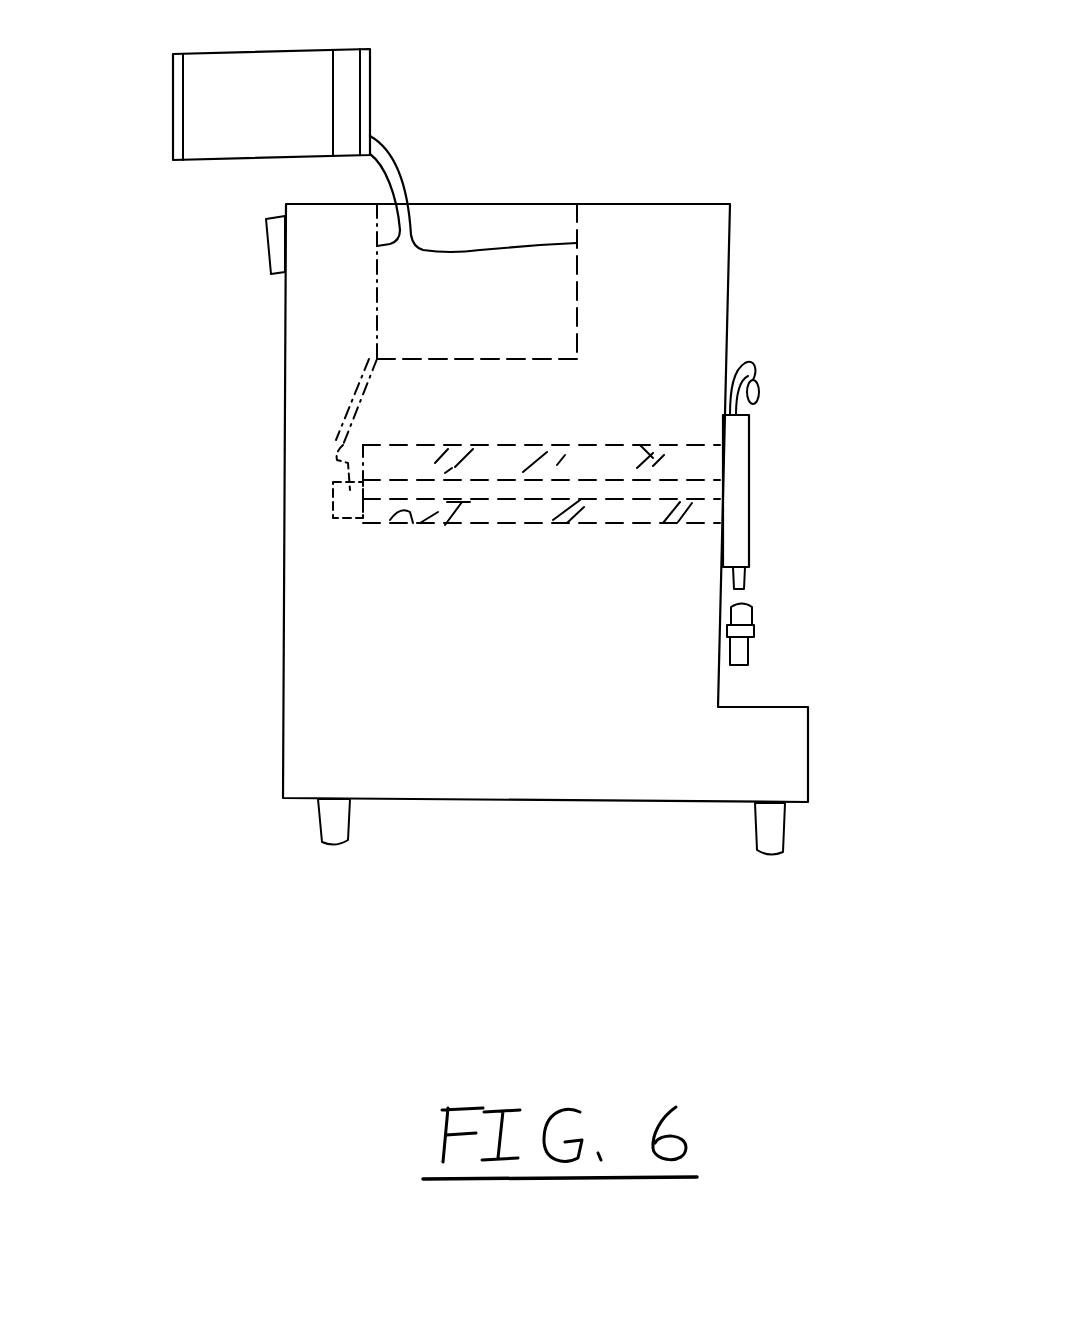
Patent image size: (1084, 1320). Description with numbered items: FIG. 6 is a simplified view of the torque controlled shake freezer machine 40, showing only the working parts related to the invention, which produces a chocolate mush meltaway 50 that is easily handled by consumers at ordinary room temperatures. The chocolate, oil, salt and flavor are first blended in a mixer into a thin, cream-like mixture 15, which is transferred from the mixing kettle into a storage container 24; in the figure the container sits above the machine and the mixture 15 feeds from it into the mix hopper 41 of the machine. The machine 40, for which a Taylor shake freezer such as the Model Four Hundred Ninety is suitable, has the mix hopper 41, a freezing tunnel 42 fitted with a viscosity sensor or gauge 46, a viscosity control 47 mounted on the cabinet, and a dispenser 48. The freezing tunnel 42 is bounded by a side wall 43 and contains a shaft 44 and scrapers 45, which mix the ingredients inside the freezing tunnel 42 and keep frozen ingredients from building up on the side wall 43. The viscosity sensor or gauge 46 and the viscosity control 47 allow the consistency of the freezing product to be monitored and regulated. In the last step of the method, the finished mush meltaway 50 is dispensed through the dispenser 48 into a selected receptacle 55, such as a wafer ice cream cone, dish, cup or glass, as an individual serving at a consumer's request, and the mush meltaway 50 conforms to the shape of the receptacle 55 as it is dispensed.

The mixture 15 is at (388, 148).
The storage container 24 is at (172, 113).
The torque controlled shake freezer machine 40 is at (243, 952).
The mix hopper 41 is at (567, 204).
The freezing tunnel 42 is at (446, 537).
The side wall 43 is at (387, 518).
The shaft 44 is at (675, 447).
The scrapers 45 is at (642, 445).
The viscosity sensor or gauge 46 is at (327, 512).
The viscosity control 47 is at (262, 235).
The dispenser 48 is at (745, 586).
The mush meltaway 50 is at (752, 614).
The receptacle 55 is at (750, 650).